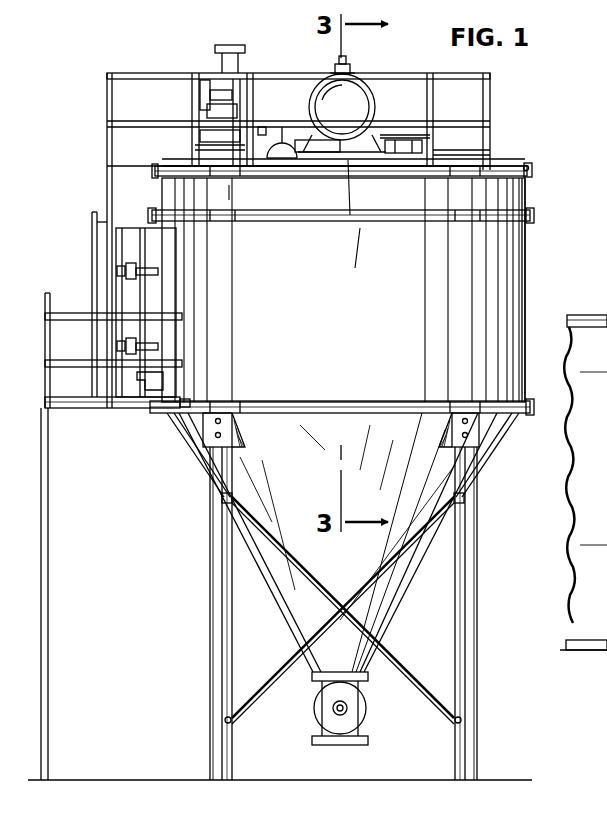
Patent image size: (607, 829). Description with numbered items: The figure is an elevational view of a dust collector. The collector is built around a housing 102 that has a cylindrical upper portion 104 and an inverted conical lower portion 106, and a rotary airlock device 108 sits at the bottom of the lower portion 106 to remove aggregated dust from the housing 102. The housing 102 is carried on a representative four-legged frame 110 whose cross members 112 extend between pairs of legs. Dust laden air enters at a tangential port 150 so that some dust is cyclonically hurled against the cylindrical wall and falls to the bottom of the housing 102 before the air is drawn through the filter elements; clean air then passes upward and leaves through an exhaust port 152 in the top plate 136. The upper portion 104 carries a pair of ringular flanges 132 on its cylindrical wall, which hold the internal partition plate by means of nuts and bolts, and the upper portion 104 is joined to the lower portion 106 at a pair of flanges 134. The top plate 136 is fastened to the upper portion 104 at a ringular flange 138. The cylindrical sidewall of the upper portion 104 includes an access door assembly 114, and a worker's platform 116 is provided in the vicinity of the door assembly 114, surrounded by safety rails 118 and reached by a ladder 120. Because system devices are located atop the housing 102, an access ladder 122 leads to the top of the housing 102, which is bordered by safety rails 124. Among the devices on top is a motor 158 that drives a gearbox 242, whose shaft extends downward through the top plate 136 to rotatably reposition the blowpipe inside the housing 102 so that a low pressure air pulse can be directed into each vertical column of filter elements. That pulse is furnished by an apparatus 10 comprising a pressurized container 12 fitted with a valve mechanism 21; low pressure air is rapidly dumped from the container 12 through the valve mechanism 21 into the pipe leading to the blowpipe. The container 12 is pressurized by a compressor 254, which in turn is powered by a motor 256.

The apparatus 10 is at (394, 66).
The pressurized container 12 is at (354, 82).
The valve mechanism 21 is at (332, 62).
The housing 102 is at (526, 290).
The cylindrical upper portion 104 is at (522, 312).
The inverted conical lower portion 106 is at (410, 591).
The rotary airlock device 108 is at (366, 713).
The four-legged frame 110 is at (474, 593).
The cross members 112 is at (352, 599).
The access door assembly 114 is at (138, 396).
The worker's platform 116 is at (86, 410).
The safety rails 118 is at (62, 309).
The ladder 120 is at (50, 587).
The access ladder 122 is at (107, 188).
The safety rails 124 is at (490, 73).
The ringular flanges 132 is at (295, 222).
The flanges 134 is at (310, 413).
The top plate 136 is at (494, 165).
The ringular flange 138 is at (530, 172).
The tangential port 150 is at (92, 239).
The exhaust port 152 is at (408, 147).
The motor 158 is at (288, 170).
The gearbox 242 is at (281, 126).
The compressor 254 is at (207, 113).
The motor 256 is at (210, 97).